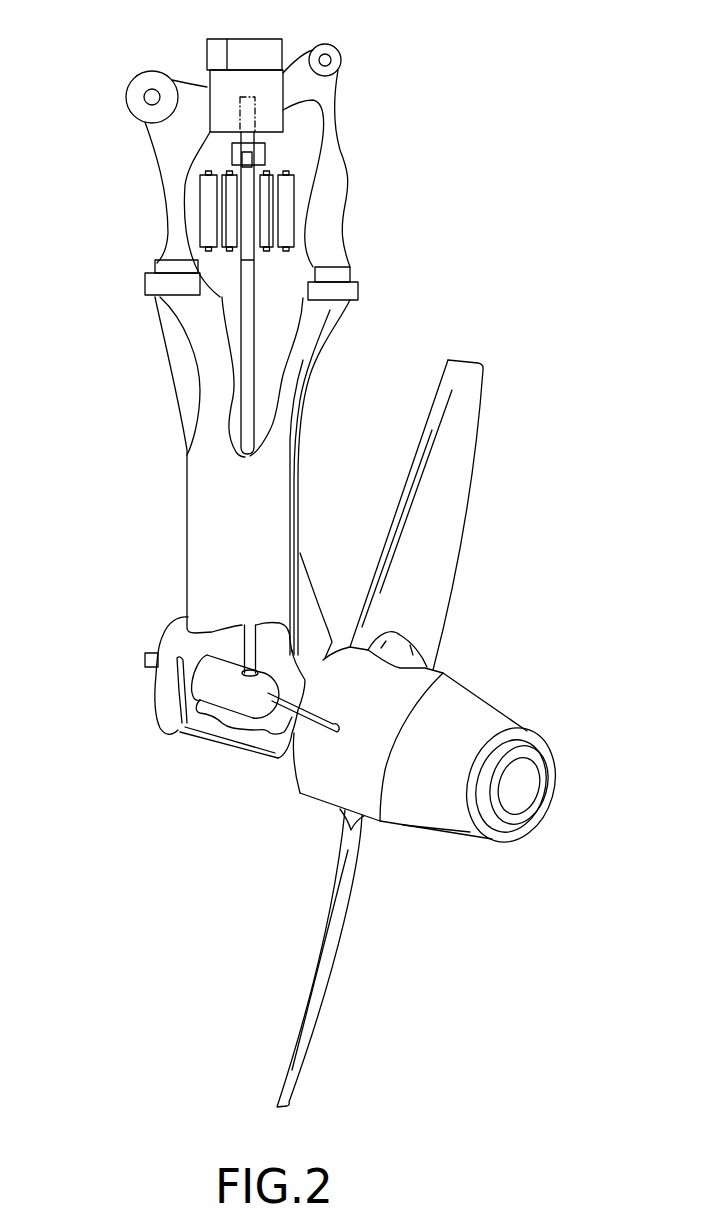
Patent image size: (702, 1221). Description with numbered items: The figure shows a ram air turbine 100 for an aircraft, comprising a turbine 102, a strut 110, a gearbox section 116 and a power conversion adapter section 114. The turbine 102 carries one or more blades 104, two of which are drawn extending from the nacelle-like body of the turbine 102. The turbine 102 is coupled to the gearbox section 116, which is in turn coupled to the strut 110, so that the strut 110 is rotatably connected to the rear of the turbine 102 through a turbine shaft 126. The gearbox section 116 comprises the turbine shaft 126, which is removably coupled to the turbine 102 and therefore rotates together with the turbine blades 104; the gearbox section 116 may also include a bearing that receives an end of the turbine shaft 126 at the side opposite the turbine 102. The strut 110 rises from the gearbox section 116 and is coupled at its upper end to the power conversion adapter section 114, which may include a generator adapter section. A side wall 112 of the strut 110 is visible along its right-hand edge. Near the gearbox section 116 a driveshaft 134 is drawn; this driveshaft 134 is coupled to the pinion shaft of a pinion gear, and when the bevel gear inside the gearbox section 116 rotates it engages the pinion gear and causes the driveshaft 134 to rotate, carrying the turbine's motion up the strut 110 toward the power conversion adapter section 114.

The ram air turbine 100 is at (485, 157).
The turbine 102 is at (433, 817).
The blades 104 is at (470, 437).
The strut 110 is at (195, 478).
The pylon side wall 112 is at (297, 477).
The power conversion adapter section 114 is at (121, 40).
The gearbox section 116 is at (218, 733).
The turbine shaft 126 is at (294, 705).
The driveshaft 134 is at (250, 650).